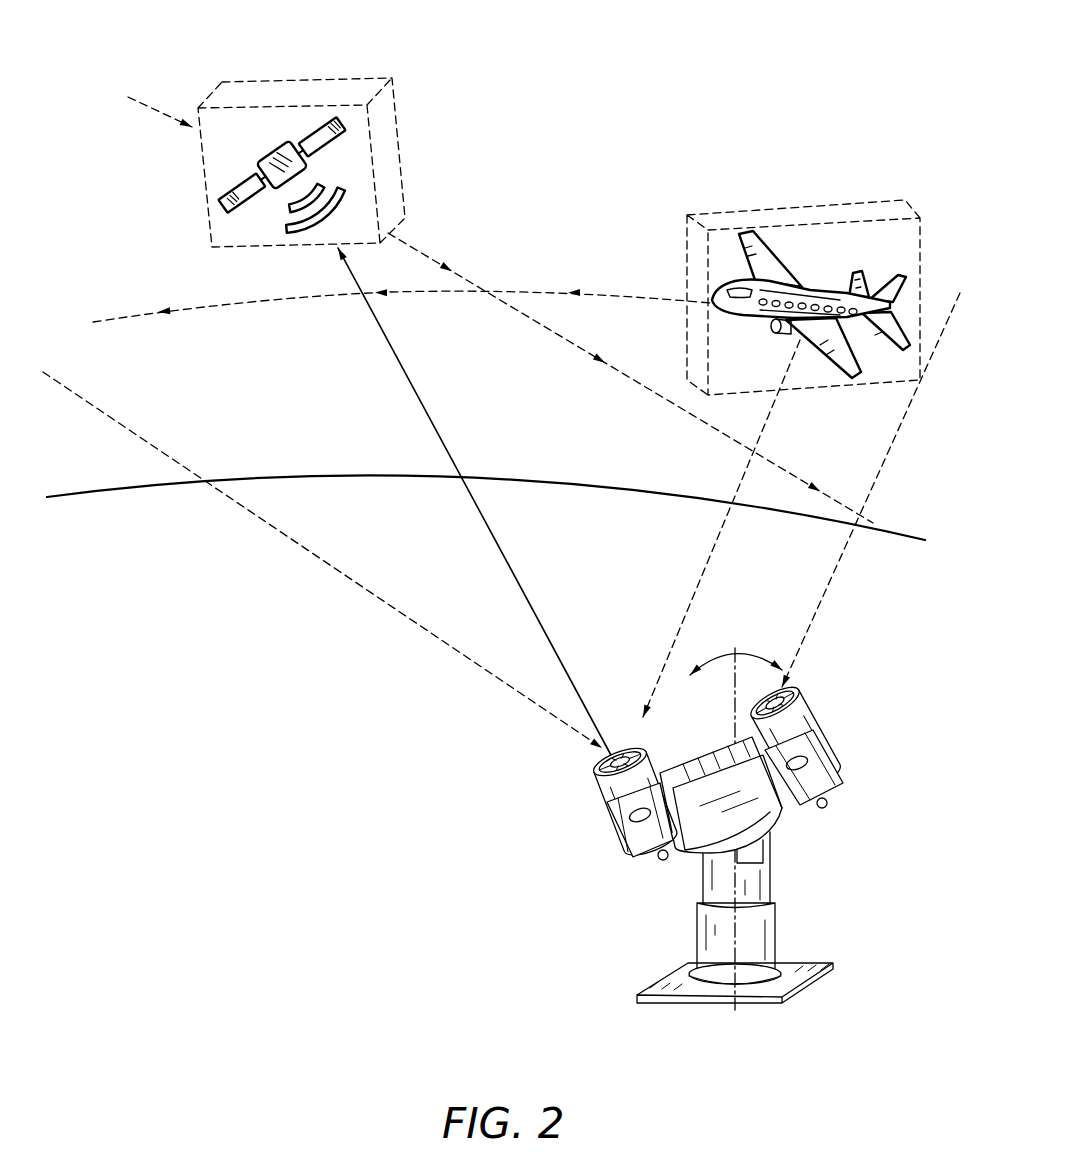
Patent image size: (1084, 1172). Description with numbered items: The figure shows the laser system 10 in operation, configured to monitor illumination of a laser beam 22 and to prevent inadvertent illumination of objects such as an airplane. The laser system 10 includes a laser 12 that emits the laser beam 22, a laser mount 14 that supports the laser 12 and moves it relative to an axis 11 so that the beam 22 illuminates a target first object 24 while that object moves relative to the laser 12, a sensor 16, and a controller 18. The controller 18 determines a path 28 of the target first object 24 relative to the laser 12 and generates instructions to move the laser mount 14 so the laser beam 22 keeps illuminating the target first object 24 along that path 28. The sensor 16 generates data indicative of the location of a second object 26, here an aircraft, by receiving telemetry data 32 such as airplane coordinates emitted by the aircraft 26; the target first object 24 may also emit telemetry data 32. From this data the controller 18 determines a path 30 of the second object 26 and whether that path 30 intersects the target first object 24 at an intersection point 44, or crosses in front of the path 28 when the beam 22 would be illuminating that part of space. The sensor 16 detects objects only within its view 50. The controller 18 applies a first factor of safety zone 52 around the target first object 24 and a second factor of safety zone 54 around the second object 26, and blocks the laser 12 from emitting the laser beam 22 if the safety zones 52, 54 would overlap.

The laser system 10 is at (716, 779).
The axis 11 is at (733, 727).
The laser 12 is at (588, 785).
The laser mount 14 is at (792, 890).
The sensor 16 is at (840, 717).
The controller 18 is at (708, 825).
The laser beam 22 is at (413, 390).
The target first object 24 is at (402, 77).
The second object 26 is at (867, 213).
The path of the target first object 28 is at (420, 248).
The path of the second object 30 is at (145, 315).
The telemetry data 32 is at (308, 233).
The intersection point 44 is at (490, 288).
The view of the optical sensor 50 is at (325, 562).
The first factor of safety zone 52 is at (305, 80).
The second factor of safety zone 54 is at (775, 205).